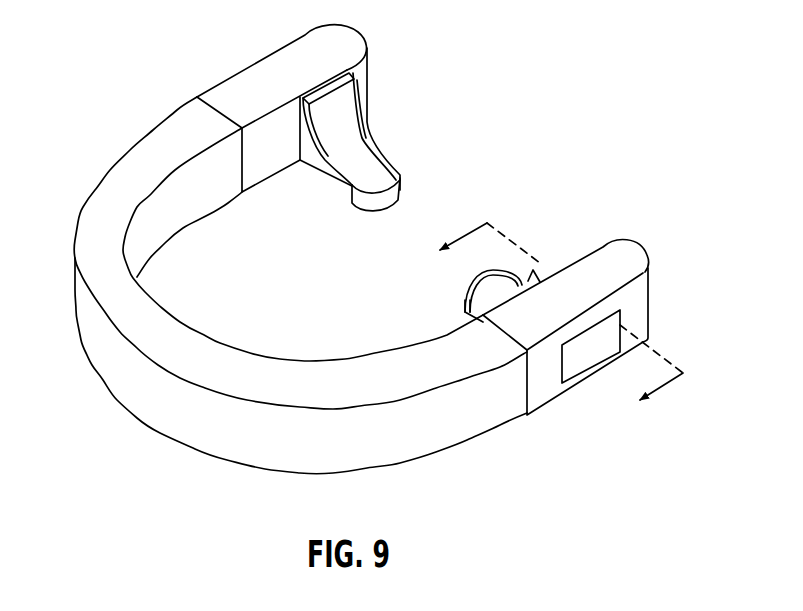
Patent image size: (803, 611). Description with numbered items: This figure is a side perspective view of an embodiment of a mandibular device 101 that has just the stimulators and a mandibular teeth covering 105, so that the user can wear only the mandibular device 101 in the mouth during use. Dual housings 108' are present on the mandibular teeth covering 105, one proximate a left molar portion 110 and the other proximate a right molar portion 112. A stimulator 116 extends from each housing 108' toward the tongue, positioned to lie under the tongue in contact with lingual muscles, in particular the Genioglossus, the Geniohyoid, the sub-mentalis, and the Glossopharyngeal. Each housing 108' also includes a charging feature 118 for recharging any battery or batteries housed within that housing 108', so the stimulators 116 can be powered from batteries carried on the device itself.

The mandibular device 101 is at (487, 151).
The mandibular teeth covering 105 is at (284, 285).
The housing 108' is at (460, 244).
The left molar portion 110 is at (433, 360).
The right molar portion 112 is at (232, 176).
The stimulator 116 is at (382, 167).
The charging feature 118 is at (575, 368).